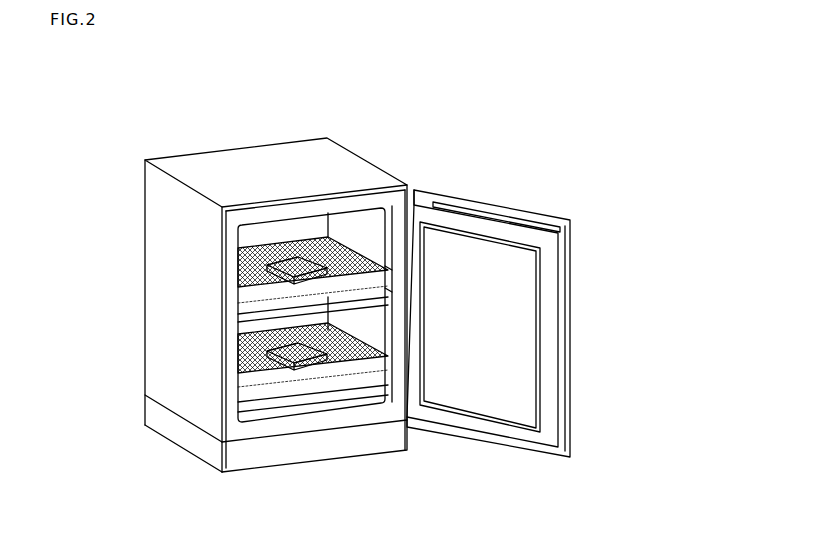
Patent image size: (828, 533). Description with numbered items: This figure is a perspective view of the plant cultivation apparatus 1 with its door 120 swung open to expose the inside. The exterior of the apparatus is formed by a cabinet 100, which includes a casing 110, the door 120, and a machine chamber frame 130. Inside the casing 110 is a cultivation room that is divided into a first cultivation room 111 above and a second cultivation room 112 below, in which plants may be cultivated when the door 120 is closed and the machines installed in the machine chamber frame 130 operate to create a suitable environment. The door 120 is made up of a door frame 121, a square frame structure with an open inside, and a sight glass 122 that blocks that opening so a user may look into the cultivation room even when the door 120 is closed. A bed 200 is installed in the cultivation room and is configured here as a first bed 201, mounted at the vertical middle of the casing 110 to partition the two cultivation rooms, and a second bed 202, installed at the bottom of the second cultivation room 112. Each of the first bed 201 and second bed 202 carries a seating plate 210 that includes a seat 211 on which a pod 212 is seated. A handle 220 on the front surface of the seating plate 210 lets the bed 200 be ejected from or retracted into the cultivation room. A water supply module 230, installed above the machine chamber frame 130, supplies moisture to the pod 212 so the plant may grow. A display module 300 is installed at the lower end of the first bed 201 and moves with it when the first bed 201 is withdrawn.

The plant cultivation apparatus 1 is at (197, 127).
The cabinet 100 is at (253, 145).
The casing 110 is at (157, 259).
The first cultivation room 111 is at (353, 225).
The second cultivation room 112 is at (412, 428).
The door 120 is at (657, 350).
The door frame 121 is at (573, 328).
The sight glass 122 is at (523, 380).
The machine chamber frame 130 is at (163, 418).
The bed 200 is at (224, 272).
The first bed 201 is at (447, 222).
The second bed 202 is at (373, 340).
The seating plate 210 is at (248, 258).
The seat 211 is at (246, 244).
The pod 212 is at (322, 297).
The handle 220 is at (392, 268).
The water supply module 230 is at (216, 411).
The display module 300 is at (395, 290).